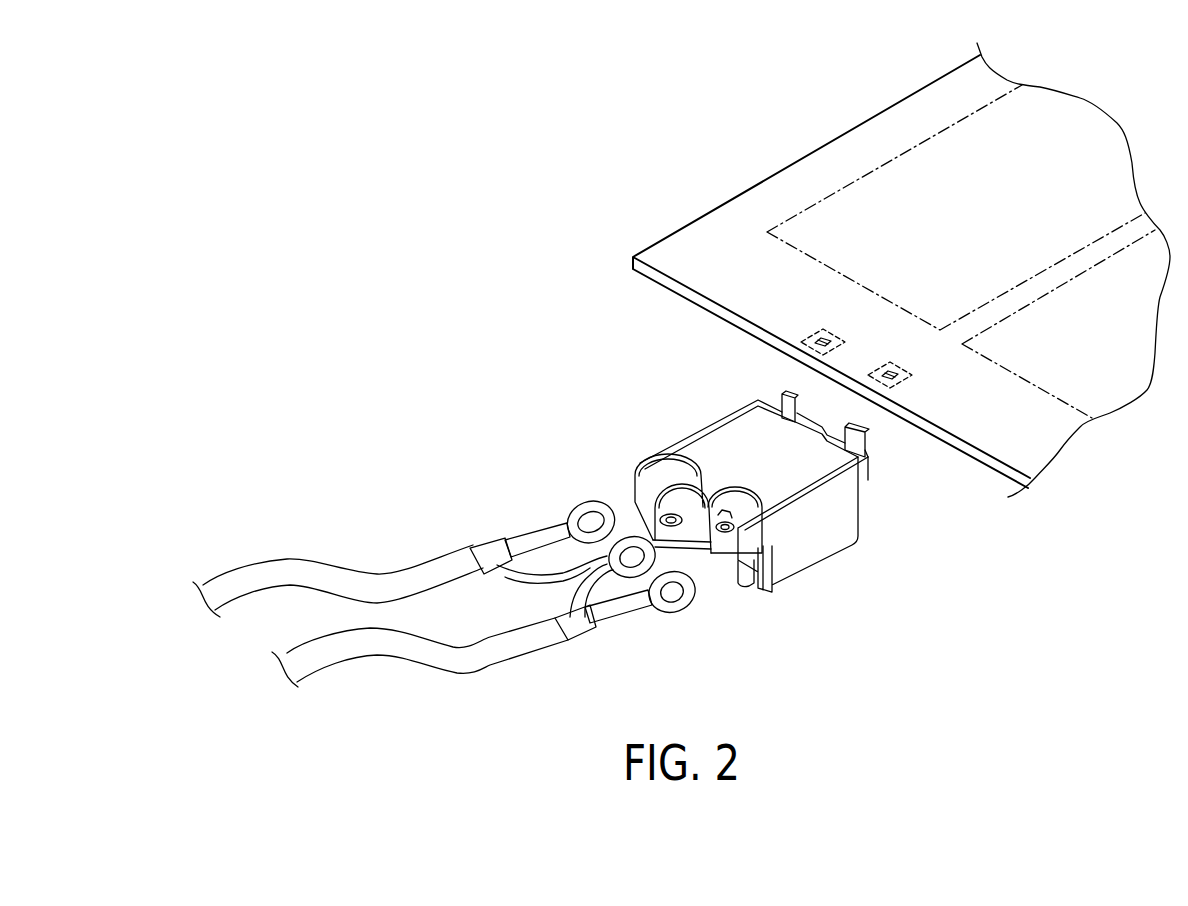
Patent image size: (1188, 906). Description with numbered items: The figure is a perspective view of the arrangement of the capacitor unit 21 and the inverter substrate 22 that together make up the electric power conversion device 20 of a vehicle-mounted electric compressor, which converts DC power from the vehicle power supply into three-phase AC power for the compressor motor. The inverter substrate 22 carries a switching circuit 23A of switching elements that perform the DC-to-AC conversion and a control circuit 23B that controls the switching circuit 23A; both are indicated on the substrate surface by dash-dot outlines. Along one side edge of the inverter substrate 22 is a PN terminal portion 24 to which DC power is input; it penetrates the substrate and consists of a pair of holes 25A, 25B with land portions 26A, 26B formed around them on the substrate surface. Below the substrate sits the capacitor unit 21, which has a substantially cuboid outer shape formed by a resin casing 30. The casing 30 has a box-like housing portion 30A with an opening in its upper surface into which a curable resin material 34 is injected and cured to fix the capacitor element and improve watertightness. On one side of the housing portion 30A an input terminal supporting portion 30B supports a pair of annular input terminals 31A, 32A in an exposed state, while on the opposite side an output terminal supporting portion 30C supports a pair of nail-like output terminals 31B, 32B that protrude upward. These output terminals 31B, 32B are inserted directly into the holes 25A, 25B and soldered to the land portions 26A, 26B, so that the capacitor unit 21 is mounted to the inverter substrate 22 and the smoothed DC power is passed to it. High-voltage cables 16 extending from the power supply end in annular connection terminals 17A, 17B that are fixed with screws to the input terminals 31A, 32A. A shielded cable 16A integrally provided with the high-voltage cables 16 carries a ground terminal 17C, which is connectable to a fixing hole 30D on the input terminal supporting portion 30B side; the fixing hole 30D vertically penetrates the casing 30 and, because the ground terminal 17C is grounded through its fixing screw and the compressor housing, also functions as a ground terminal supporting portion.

The high-voltage cables 16 is at (368, 642).
The shielded cable 16A is at (548, 568).
The connection terminal 17A is at (668, 612).
The connection terminal 17B is at (570, 503).
The ground terminal 17C is at (614, 620).
The electric power conversion device 20 is at (622, 160).
The capacitor unit 21 is at (835, 537).
The inverter substrate 22 is at (798, 156).
The switching circuit 23A is at (893, 158).
The control circuit 23B is at (1067, 402).
The PN terminal portion 24 is at (872, 328).
The hole 25A is at (890, 366).
The hole 25B is at (824, 335).
The land portion 26A is at (905, 384).
The land portion 26B is at (812, 333).
The casing 30 is at (755, 514).
The housing portion 30A is at (725, 437).
The input terminal supporting portion 30B is at (703, 574).
The output terminal supporting portion 30C is at (846, 408).
The fixing hole 30D is at (675, 513).
The input terminal 31A is at (718, 550).
The output terminal 31B is at (870, 458).
The input terminal 32A is at (648, 470).
The output terminal 32B is at (784, 398).
The resin material 34 is at (703, 440).